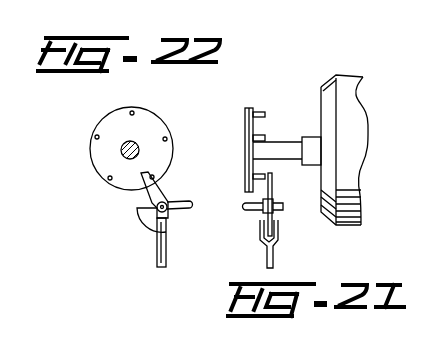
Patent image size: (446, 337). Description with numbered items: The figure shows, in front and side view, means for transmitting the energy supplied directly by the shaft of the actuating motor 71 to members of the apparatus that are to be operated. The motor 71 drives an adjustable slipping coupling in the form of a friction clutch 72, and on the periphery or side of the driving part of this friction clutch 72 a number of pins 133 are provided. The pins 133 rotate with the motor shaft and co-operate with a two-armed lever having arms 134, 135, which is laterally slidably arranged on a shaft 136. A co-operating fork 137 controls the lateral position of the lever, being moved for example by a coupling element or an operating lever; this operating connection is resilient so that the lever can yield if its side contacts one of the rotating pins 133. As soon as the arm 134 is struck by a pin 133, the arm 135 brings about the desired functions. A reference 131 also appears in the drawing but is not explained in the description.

In FIG. 21, the motor 71 is at (347, 89).
In FIG. 22, the friction clutch 72 is at (107, 124).
In FIG. 21, the friction clutch 72 is at (250, 133).
In FIG. 22, the reference element 131 is at (195, 6).
In FIG. 22, the pins 133 is at (107, 177).
In FIG. 21, the pins 133 is at (265, 115).
In FIG. 22, the arm of lever 134 is at (147, 191).
In FIG. 21, the arm of lever 134 is at (272, 192).
In FIG. 22, the arm of lever 135 is at (183, 201).
In FIG. 22, the shaft 136 is at (157, 213).
In FIG. 21, the shaft 136 is at (250, 210).
In FIG. 22, the fork 137 is at (157, 264).
In FIG. 21, the fork 137 is at (273, 259).